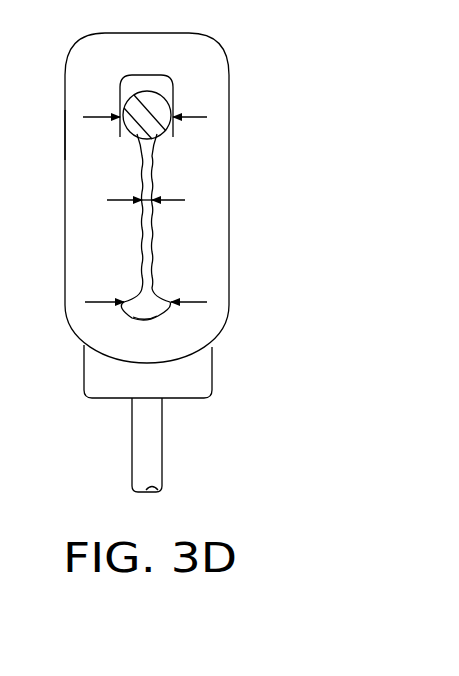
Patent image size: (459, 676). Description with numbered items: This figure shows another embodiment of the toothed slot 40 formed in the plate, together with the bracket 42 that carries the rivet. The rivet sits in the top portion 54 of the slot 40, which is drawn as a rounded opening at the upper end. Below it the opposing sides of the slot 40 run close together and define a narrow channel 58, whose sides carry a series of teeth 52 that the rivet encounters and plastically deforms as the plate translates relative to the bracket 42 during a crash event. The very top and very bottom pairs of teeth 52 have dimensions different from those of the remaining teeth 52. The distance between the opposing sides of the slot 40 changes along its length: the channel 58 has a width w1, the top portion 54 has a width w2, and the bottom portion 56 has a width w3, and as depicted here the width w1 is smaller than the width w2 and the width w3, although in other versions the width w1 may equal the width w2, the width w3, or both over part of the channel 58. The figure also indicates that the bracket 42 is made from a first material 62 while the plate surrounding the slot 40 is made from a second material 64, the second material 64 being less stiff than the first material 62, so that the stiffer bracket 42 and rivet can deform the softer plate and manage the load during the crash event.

The slot 40 is at (193, 240).
The bracket 42 is at (188, 380).
The teeth 52 is at (142, 287).
The top portion 54 is at (150, 83).
The bottom portion 56 is at (145, 310).
The channel 58 is at (143, 227).
The first material 62 is at (105, 380).
The second material 64 is at (97, 167).
The width w1 is at (180, 197).
The width w2 is at (198, 112).
The width w3 is at (200, 300).